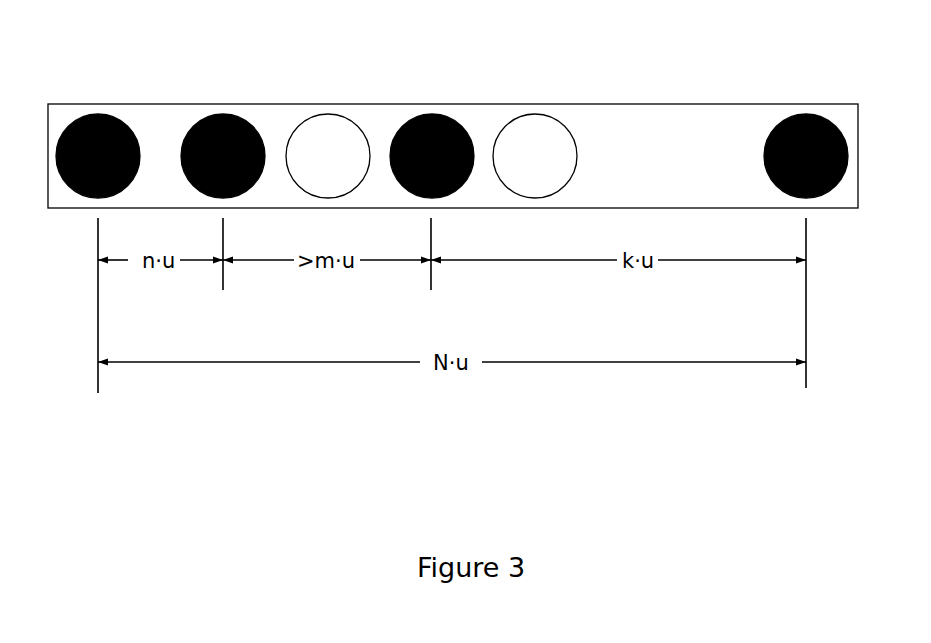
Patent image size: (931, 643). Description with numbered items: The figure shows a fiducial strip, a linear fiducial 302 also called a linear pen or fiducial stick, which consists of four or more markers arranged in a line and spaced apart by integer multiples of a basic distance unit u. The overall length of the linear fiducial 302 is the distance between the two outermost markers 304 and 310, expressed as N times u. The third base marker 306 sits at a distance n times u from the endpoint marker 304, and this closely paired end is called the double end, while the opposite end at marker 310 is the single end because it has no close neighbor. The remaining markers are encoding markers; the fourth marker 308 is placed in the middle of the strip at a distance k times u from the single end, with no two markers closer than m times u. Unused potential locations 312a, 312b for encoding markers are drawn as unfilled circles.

The linear fiducial 302 is at (648, 104).
The endpoint marker 304 is at (112, 118).
The third base marker 306 is at (248, 118).
The fourth marker 308 is at (446, 116).
The outermost marker 310 is at (778, 118).
The unused potential location 312a is at (348, 182).
The unused potential location 312b is at (545, 182).